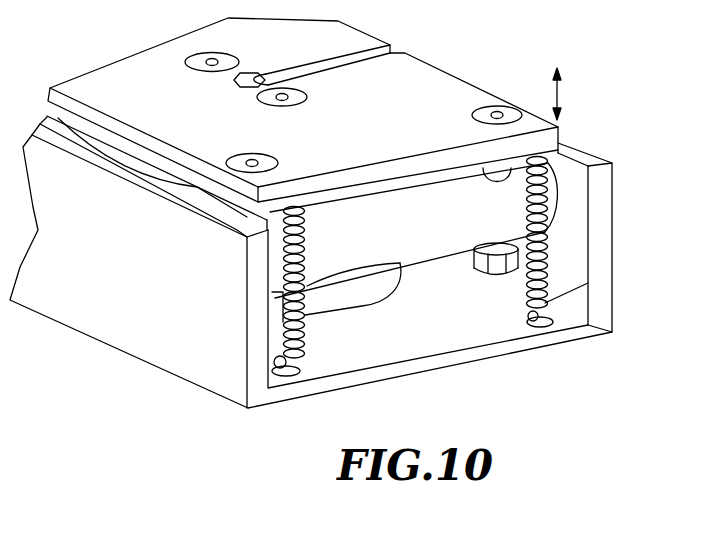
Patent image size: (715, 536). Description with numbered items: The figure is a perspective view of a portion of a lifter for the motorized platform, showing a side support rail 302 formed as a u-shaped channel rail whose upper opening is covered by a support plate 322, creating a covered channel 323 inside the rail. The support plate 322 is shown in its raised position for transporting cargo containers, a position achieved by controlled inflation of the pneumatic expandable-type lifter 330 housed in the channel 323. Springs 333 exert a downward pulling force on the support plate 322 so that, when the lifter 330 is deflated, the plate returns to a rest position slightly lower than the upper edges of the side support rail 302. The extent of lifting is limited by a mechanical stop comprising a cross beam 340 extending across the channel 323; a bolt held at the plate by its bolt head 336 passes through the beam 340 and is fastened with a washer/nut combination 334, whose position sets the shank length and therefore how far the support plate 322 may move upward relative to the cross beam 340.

The side support rail 302 is at (613, 240).
The support plate 322 is at (437, 87).
The covered channel 323 is at (460, 291).
The pneumatic lifter 330 is at (362, 293).
The spring 333 is at (553, 298).
The washer/nut combination 334 is at (548, 284).
The bolt head 336 is at (489, 107).
The cross beam 340 is at (495, 200).